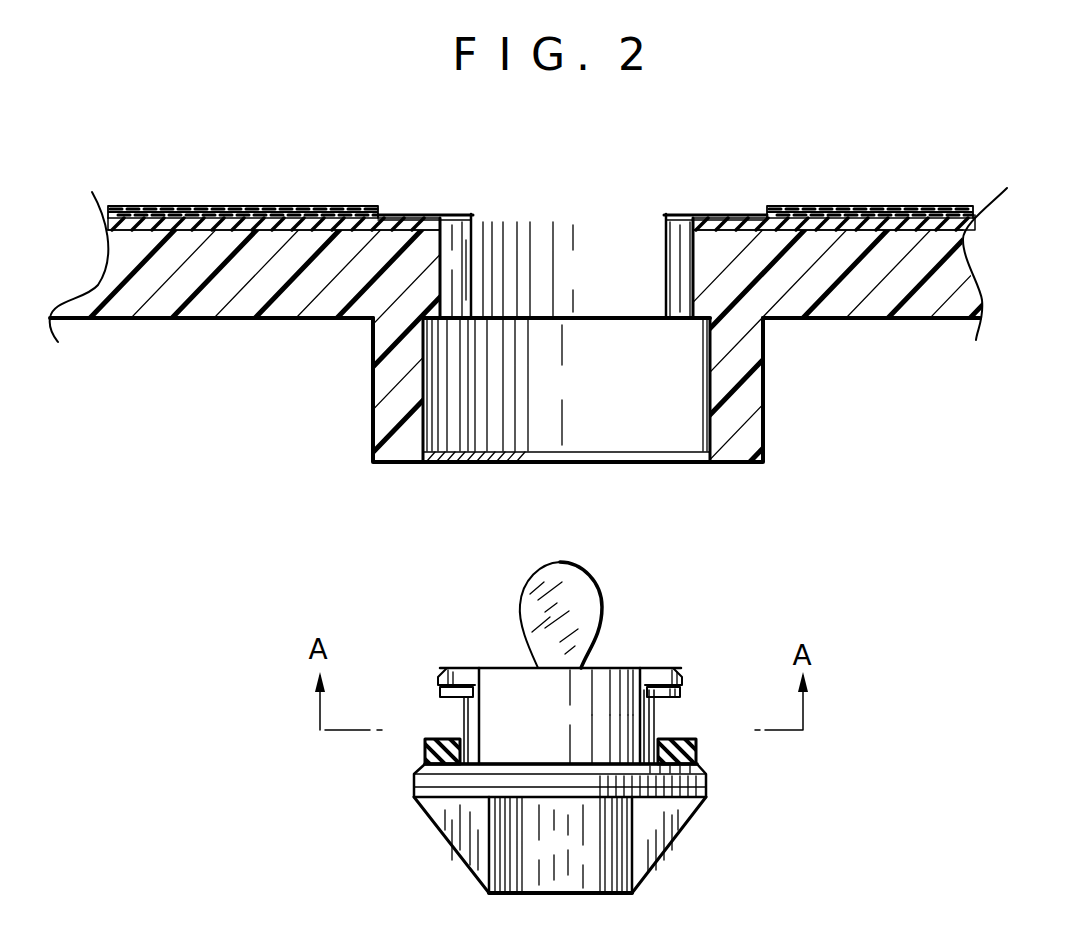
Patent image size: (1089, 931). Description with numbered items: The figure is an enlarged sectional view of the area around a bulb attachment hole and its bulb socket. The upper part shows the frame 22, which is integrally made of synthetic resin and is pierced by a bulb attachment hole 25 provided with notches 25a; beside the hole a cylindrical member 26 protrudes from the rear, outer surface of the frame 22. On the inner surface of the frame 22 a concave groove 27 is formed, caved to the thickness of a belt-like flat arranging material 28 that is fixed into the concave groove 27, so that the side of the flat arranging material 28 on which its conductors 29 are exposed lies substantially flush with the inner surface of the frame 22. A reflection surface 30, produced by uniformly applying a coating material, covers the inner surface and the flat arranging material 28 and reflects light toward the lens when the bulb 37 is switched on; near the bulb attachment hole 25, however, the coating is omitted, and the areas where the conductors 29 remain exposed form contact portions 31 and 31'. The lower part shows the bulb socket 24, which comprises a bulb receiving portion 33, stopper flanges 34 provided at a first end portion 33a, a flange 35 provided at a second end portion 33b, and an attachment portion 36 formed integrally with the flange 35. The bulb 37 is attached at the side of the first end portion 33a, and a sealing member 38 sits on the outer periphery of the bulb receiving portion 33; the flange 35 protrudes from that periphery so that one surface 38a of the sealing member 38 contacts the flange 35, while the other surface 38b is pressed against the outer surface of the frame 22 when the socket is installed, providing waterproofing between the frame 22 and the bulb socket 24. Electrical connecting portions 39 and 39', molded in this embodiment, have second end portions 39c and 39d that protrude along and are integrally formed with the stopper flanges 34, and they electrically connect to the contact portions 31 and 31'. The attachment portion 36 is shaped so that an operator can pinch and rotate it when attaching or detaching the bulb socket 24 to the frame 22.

The frame 22 is at (544, 329).
The bulb socket 24 is at (577, 708).
The bulb attachment hole 25 is at (550, 230).
The notch 25a is at (470, 250).
The cylindrical member 26 is at (748, 427).
The concave groove 27 is at (273, 230).
The flat arranging material 28 is at (117, 225).
The conductor 29 is at (540, 172).
The reflection surface 30 is at (223, 217).
The contact portion 31 is at (415, 173).
The contact portion 31' is at (737, 173).
The bulb receiving portion 33 is at (503, 714).
The first end portion 33a is at (523, 683).
The second end portion 33b is at (490, 753).
The stopper flange 34 is at (467, 673).
The flange 35 is at (703, 785).
The attachment portion 36 is at (592, 850).
The bulb 37 is at (587, 568).
The sealing member 38 is at (560, 776).
The one surface of sealing member 38a is at (432, 762).
The other surface of sealing member 38b is at (447, 739).
The electrical connecting portion 39 is at (504, 647).
The second end portion of electrical connecting portion 39c is at (567, 678).
The electrical connecting portion 39' is at (759, 655).
The second end portion of electrical connecting portion 39d is at (649, 727).